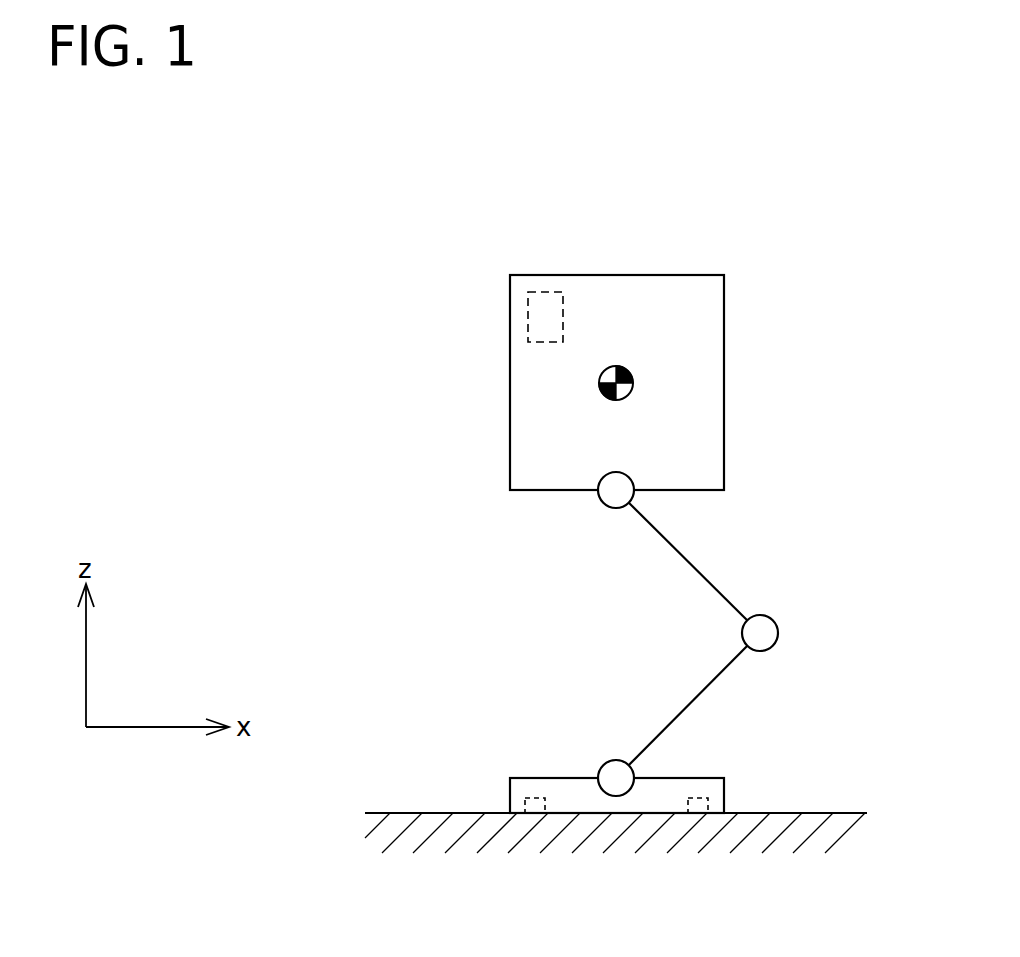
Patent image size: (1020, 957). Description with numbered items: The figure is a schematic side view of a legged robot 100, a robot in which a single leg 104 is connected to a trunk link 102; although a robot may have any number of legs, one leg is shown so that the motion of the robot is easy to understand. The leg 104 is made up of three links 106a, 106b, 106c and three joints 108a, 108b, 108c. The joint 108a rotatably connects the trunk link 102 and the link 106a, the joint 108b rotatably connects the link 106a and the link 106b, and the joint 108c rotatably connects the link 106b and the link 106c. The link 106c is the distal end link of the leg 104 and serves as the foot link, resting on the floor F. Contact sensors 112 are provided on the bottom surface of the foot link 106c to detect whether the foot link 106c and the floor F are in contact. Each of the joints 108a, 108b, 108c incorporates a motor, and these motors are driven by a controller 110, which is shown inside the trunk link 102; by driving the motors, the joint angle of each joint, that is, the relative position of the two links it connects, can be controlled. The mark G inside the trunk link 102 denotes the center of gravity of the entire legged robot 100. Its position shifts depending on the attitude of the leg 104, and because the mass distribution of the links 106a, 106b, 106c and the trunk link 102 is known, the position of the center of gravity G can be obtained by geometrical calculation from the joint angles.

The legged robot 100 is at (669, 178).
The trunk link 102 is at (725, 298).
The leg 104 is at (808, 480).
The link 106a is at (687, 562).
The link 106b is at (683, 707).
The foot link 106c is at (509, 795).
The joint 108a is at (603, 502).
The joint 108b is at (742, 633).
The joint 108c is at (600, 768).
The controller 110 is at (528, 311).
The contact sensors 112 is at (533, 815).
The center of gravity G is at (634, 380).
The floor F is at (397, 813).